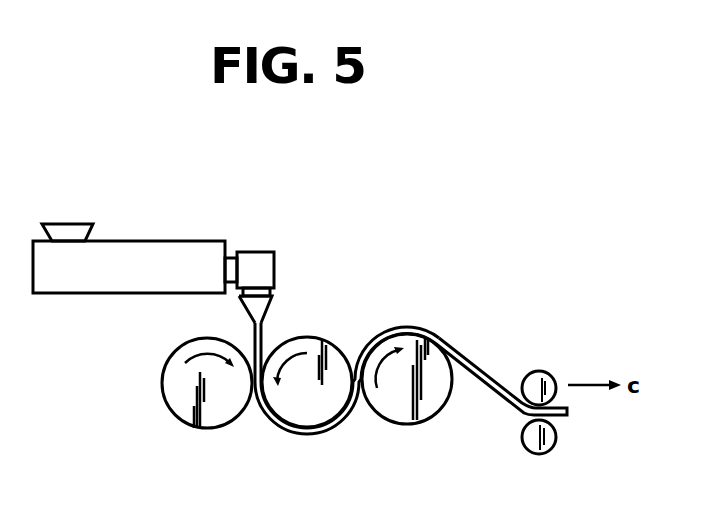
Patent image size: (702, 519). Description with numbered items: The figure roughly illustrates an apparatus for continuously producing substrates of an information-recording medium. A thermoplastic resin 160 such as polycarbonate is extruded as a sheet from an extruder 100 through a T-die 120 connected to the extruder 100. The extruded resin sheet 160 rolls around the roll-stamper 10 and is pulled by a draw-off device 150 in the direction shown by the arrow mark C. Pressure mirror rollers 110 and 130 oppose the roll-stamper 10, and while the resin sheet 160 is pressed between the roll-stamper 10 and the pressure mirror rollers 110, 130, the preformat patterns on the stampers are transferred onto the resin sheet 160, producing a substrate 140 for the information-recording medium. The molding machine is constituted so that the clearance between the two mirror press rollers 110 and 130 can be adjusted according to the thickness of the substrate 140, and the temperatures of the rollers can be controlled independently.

The extruder 100 is at (83, 278).
The T-die 120 is at (260, 303).
The thermoplastic resin 160 is at (262, 340).
The pressure mirror roller 110 is at (214, 408).
The roll-stamper 10 is at (308, 402).
The pressure mirror roller 130 is at (402, 398).
The substrate 140 is at (487, 373).
The draw-off device 150 is at (523, 444).